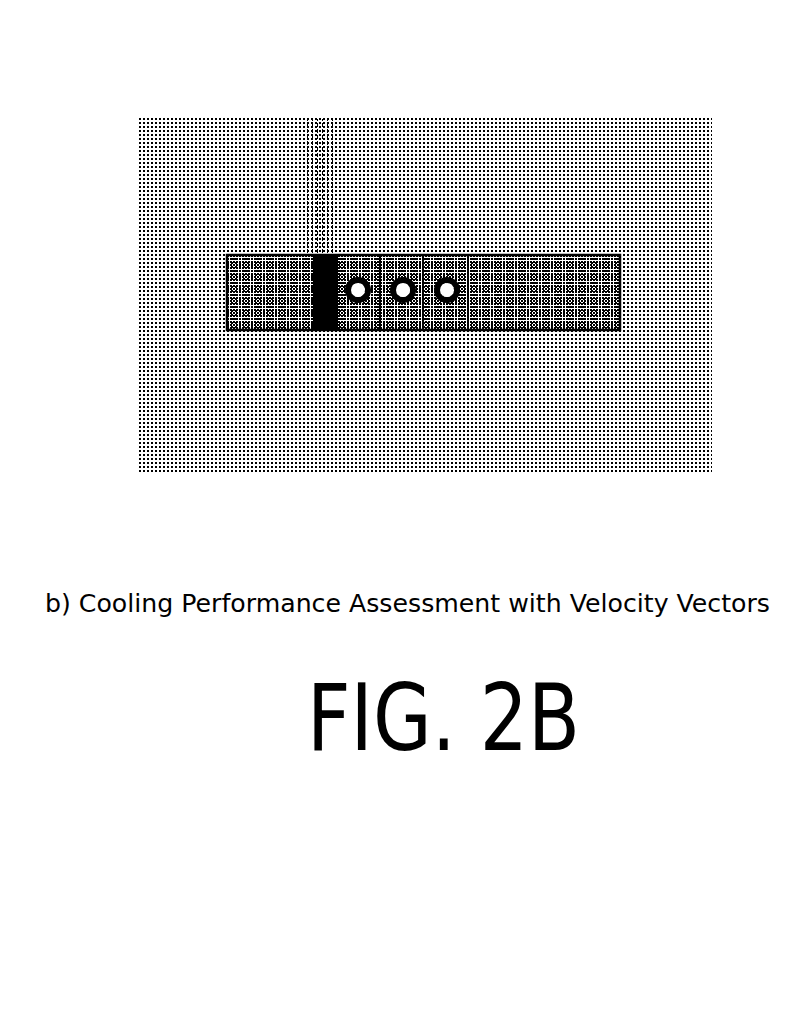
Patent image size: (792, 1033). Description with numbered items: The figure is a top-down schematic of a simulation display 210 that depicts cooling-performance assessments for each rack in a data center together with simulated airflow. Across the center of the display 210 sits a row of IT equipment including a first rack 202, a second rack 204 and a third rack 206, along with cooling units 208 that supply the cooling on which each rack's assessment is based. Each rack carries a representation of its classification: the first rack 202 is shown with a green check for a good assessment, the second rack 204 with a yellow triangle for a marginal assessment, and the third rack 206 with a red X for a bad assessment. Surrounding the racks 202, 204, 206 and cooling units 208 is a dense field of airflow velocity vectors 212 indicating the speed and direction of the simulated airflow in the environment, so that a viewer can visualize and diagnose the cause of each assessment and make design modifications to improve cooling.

The simulation display 210 is at (126, 99).
The airflow velocity vectors 212 is at (319, 132).
The first rack 202 is at (228, 255).
The second rack 204 is at (307, 255).
The third rack 206 is at (350, 255).
The cooling units 208 is at (327, 330).